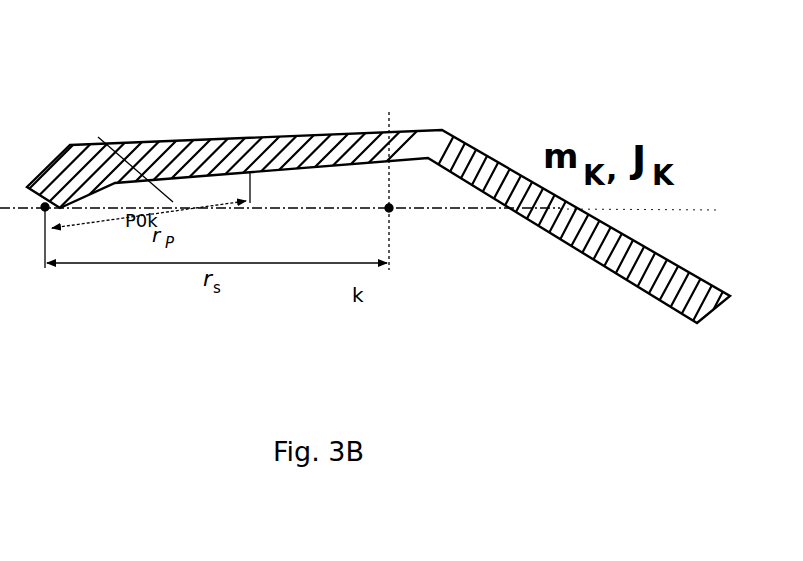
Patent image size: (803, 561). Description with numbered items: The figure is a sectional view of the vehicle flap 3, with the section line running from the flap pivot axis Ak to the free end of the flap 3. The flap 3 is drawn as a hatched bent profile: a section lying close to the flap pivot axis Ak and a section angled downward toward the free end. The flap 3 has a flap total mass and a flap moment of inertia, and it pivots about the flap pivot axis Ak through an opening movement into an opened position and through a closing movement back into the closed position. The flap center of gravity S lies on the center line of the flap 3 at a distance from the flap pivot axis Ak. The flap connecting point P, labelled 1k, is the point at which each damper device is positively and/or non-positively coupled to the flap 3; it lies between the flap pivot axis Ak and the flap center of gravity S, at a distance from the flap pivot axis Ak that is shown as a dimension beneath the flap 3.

The flap 3 is at (449, 87).
The flap center of gravity S is at (402, 191).
The flap connecting point 1k is at (240, 224).
The flap connecting point P is at (169, 200).
The flap pivot axis Ak is at (121, 161).